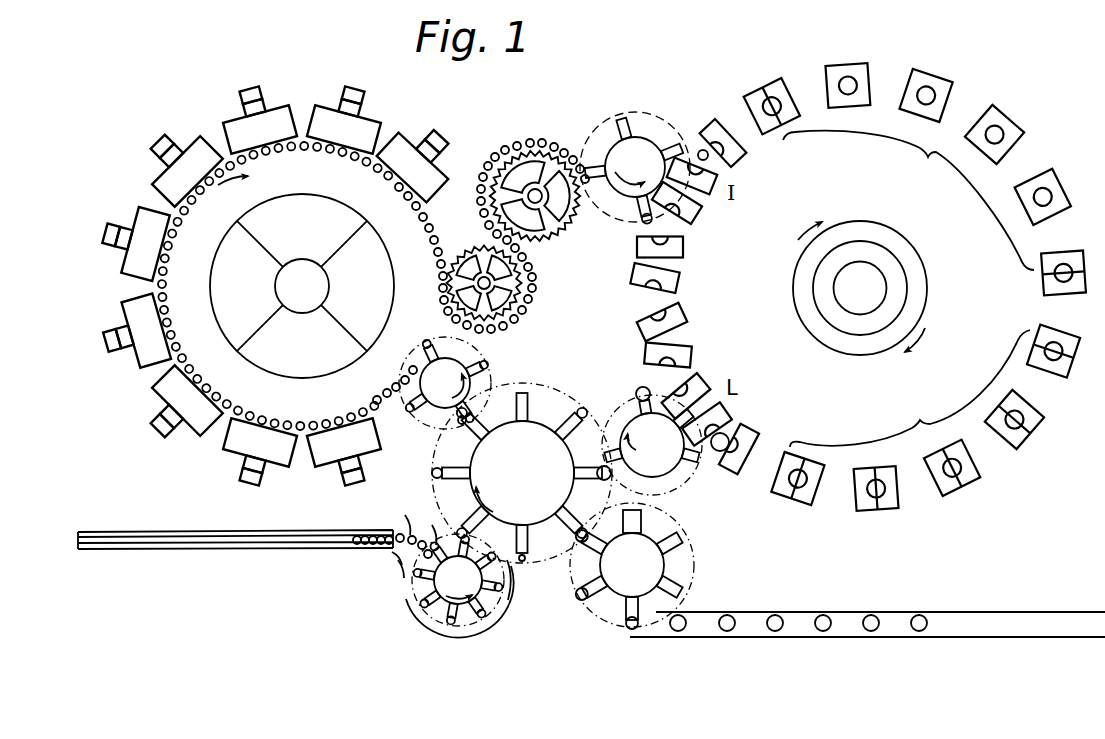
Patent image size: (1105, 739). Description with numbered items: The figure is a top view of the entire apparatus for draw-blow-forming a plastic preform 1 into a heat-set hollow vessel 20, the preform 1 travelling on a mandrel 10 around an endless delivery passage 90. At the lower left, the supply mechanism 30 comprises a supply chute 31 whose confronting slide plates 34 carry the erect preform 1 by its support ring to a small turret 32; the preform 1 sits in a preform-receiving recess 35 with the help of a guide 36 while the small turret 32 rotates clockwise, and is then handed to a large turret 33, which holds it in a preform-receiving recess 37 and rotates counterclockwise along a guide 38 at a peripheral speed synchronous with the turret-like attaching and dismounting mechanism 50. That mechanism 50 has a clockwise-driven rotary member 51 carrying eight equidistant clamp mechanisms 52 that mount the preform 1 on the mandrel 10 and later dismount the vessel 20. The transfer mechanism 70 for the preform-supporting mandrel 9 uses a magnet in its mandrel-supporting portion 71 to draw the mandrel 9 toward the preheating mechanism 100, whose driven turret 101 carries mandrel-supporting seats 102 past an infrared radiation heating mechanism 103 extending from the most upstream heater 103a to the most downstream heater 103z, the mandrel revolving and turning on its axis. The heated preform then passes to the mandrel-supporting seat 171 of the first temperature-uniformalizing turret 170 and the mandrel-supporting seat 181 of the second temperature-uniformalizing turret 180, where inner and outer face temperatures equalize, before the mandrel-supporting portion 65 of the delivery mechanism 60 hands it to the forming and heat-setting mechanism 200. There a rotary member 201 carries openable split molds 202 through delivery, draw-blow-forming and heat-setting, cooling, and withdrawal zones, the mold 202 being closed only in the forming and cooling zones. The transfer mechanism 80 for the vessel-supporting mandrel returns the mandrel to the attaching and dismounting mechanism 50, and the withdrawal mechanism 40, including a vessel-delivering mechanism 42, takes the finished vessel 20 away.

The preform 1 is at (462, 422).
The preform-supporting mandrel 9 is at (396, 374).
The mandrel 10 is at (522, 562).
The hollow vessel 20 is at (867, 617).
The supply mechanism 30 is at (467, 605).
The supply chute 31 is at (316, 550).
The small turret 32 is at (397, 562).
The large turret 33 is at (478, 632).
The slide plates 34 is at (255, 563).
The preform-receiving recess 35 is at (400, 600).
The guide 36 is at (412, 535).
The preform-receiving recess 37 is at (438, 548).
The guide 38 is at (503, 612).
The withdrawal mechanism 40 is at (712, 548).
The vessel-delivering mechanism 42 is at (838, 610).
The turret-like attaching and dismounting mechanism 50 is at (525, 485).
The rotary member 51 is at (522, 473).
The clamp mechanisms 52 is at (576, 410).
The delivery mechanism 60 is at (637, 144).
The mandrel-supporting portion 65 is at (584, 168).
The transfer mechanism 70 is at (452, 387).
The mandrel-supporting portion 71 is at (482, 380).
The transfer mechanism 80 is at (700, 487).
The endless delivery passage 90 is at (614, 213).
The preheating mechanism 100 is at (148, 374).
The turret 101 is at (413, 333).
The mandrel-supporting seats 102 is at (415, 305).
The infrared radiation heating mechanism 103 is at (196, 432).
The infrared radiation heating mechanism 103a is at (328, 458).
The infrared radiation heating mechanism 103z is at (395, 140).
The first temperature-uniformalizing turret 170 is at (520, 320).
The mandrel-supporting seat 171 is at (458, 250).
The second temperature-uniformalizing turret 180 is at (562, 245).
The mandrel-supporting seat 181 is at (573, 233).
The forming and heat-setting mechanism 200 is at (915, 277).
The rotary member 201 is at (920, 250).
The split mold 202 is at (948, 78).